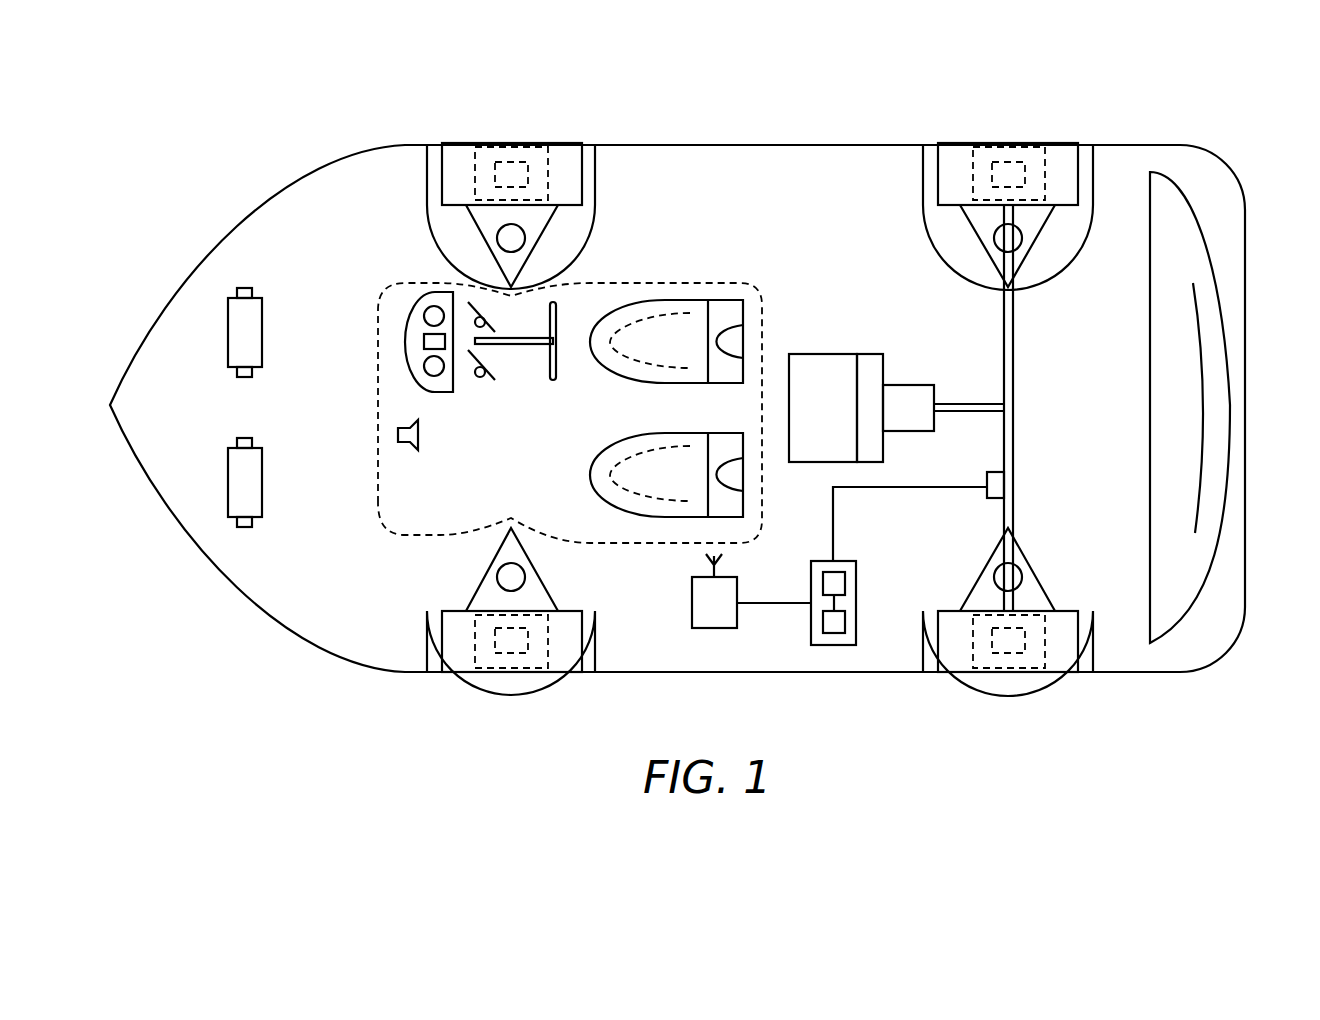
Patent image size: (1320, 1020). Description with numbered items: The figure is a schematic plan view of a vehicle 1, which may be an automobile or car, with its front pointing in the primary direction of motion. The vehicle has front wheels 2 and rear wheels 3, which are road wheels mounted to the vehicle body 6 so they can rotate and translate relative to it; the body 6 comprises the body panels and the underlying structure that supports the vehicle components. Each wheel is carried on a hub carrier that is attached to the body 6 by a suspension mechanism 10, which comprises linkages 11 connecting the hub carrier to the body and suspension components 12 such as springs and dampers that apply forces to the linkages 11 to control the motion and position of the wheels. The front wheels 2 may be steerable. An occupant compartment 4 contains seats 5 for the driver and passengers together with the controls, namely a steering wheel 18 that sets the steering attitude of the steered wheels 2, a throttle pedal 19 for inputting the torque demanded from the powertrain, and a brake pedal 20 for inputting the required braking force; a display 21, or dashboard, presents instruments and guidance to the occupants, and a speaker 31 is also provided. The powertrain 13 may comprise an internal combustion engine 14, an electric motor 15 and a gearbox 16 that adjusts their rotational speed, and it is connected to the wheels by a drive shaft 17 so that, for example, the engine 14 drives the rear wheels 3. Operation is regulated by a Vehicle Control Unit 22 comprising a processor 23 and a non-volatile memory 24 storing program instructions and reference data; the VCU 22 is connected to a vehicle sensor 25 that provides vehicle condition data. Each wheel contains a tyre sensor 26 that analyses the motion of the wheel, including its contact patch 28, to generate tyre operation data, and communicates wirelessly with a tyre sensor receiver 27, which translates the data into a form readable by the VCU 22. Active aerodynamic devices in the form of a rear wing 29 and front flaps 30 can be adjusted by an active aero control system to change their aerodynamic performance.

The vehicle 1 is at (1252, 123).
The front wheels 2 is at (567, 143).
The rear wheels 3 is at (1065, 143).
The occupant compartment 4 is at (733, 283).
The seats 5 is at (672, 300).
The vehicle body 6 is at (1245, 405).
The suspension mechanism 10 is at (466, 253).
The linkages 11 is at (483, 240).
The suspension components 12 is at (525, 240).
The powertrain 13 is at (888, 364).
The internal combustion engine 14 is at (820, 354).
The electric motor 15 is at (868, 354).
The gearbox 16 is at (910, 385).
The drive shaft 17 is at (1014, 437).
The steering wheel 18 is at (556, 370).
The throttle pedal 19 is at (488, 318).
The brake pedal 20 is at (490, 370).
The display 21 is at (405, 342).
The Vehicle Control Unit 22 is at (862, 600).
The processor 23 is at (846, 622).
The non-volatile memory 24 is at (846, 584).
The vehicle sensor 25 is at (990, 472).
The tyre sensor 26 is at (522, 143).
The tyre sensor receiver 27 is at (714, 628).
The contact patch 28 is at (483, 145).
The rear wing 29 is at (1192, 248).
The front flaps 30 is at (228, 333).
The speaker 31 is at (418, 435).